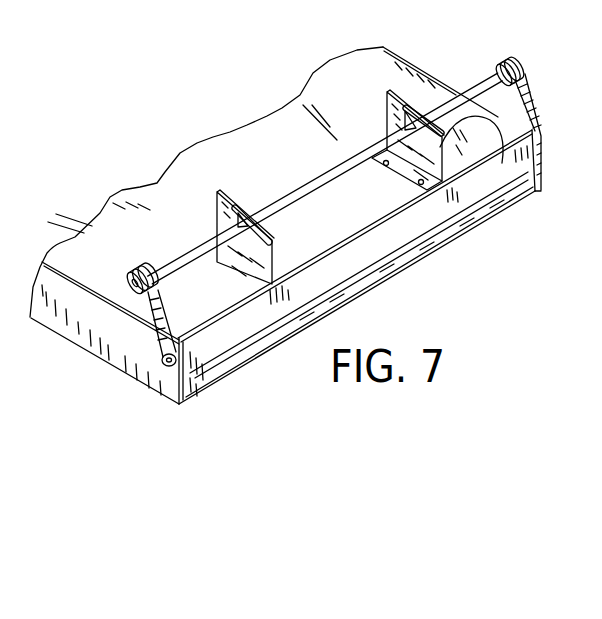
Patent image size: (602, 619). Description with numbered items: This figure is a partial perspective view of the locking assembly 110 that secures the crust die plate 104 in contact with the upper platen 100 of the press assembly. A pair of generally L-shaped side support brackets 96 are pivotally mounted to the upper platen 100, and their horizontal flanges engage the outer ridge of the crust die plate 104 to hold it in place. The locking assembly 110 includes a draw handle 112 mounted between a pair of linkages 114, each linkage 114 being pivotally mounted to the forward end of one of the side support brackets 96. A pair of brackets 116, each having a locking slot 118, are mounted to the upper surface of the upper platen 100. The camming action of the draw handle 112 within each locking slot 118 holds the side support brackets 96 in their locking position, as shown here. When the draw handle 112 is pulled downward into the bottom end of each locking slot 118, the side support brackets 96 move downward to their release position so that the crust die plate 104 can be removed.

The side support bracket 96 is at (144, 367).
The upper platen 100 is at (253, 143).
The crust die plate 104 is at (440, 240).
The locking assembly 110 is at (531, 55).
The draw handle 112 is at (470, 84).
The linkage 114 is at (163, 306).
The bracket 116 is at (217, 223).
The locking slot 118 is at (274, 220).